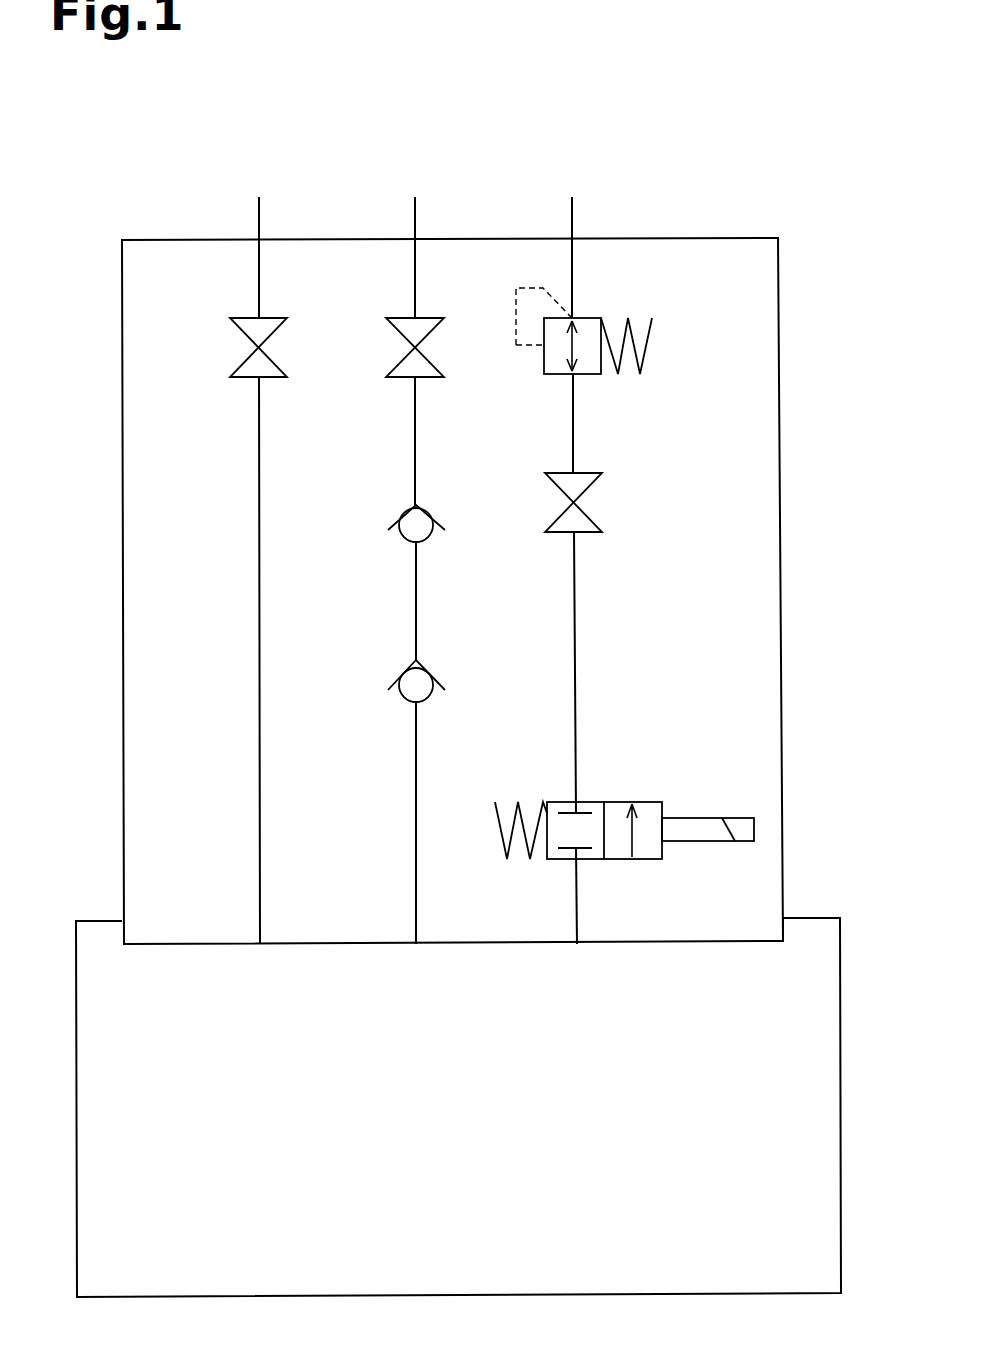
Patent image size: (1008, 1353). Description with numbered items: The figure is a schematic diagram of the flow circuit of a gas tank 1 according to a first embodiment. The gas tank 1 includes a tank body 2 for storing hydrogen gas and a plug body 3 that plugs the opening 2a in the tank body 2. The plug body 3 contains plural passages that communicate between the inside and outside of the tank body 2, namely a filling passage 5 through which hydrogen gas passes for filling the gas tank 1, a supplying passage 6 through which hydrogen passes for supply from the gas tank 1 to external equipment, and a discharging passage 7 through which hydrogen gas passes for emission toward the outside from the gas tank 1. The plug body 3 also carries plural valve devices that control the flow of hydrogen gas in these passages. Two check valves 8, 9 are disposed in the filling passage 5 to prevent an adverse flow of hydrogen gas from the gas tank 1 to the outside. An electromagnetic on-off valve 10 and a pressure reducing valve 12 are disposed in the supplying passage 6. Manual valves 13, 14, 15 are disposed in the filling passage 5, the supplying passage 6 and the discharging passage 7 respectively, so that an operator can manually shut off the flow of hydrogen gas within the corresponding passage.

The gas tank 1 is at (791, 152).
The tank body 2 is at (841, 1105).
The opening 2a is at (784, 931).
The plug body 3 is at (781, 585).
The filling passage 5 is at (416, 217).
The supplying passage 6 is at (572, 217).
The discharging passage 7 is at (260, 217).
The check valve 8 is at (428, 665).
The check valve 9 is at (428, 508).
The electromagnetic on-off valve 10 is at (614, 802).
The pressure reducing valve 12 is at (574, 318).
The manual valve 13 is at (262, 318).
The manual valve 14 is at (418, 318).
The manual valve 15 is at (584, 473).